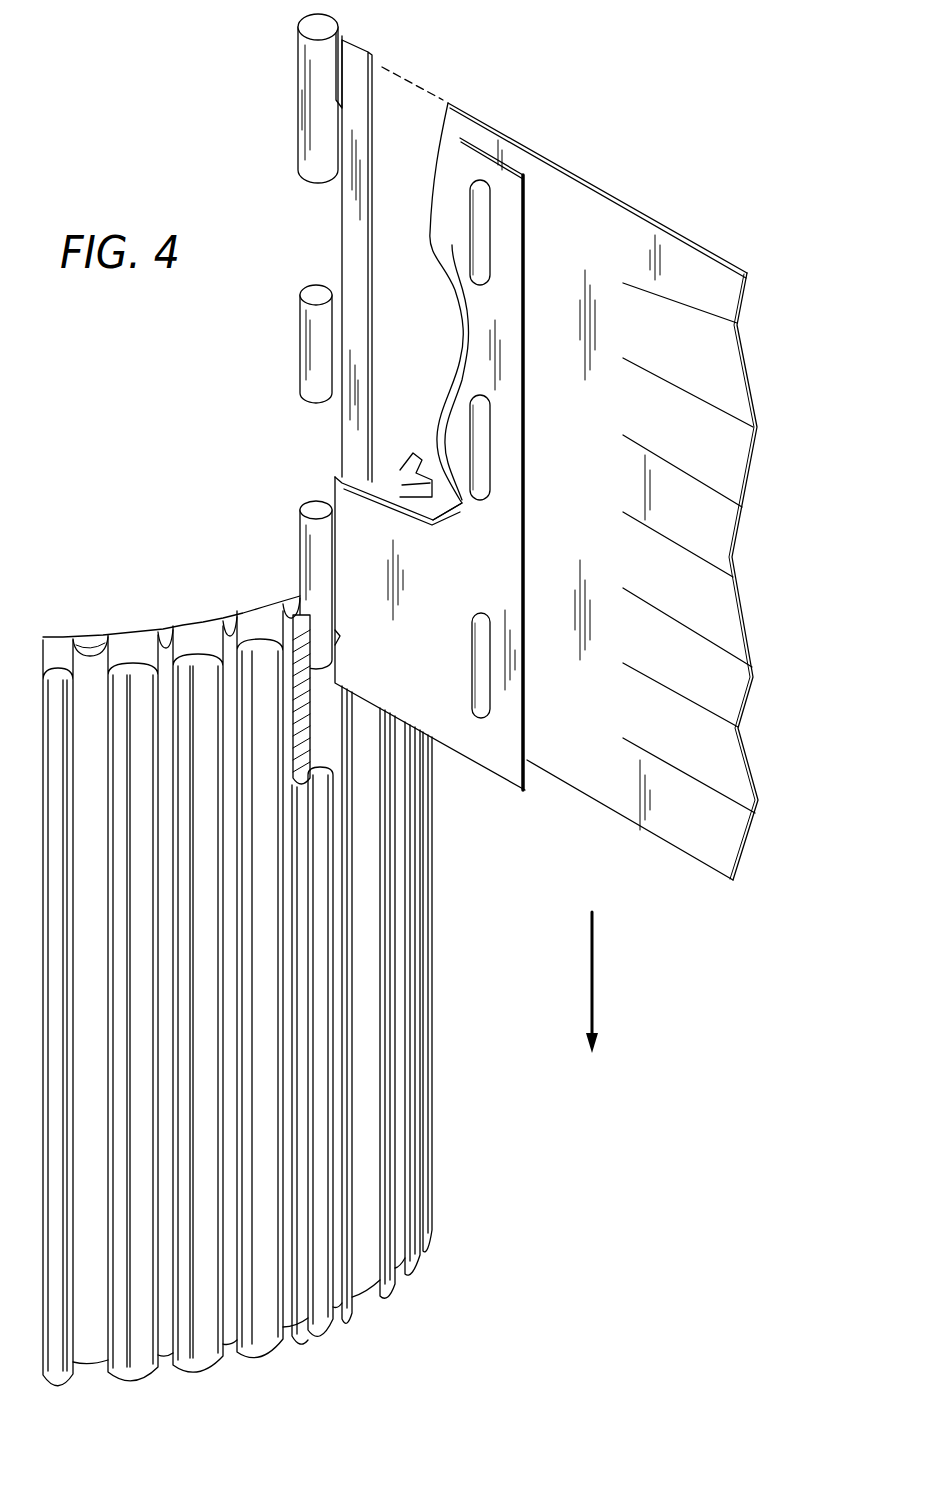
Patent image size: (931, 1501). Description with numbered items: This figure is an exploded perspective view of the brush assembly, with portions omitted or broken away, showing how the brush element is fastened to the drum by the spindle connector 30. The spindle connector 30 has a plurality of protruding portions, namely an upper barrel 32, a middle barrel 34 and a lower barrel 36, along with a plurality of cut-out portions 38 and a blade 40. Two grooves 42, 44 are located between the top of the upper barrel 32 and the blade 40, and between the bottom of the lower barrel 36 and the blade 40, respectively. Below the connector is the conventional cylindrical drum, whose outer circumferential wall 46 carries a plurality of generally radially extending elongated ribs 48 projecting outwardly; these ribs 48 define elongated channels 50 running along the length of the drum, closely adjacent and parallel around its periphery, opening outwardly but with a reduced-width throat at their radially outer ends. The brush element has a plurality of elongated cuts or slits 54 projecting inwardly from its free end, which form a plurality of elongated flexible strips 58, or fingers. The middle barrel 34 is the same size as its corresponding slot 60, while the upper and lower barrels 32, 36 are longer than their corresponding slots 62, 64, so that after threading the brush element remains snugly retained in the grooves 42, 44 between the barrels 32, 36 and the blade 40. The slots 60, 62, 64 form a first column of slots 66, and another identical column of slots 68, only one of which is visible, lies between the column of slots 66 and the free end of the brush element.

The spindle connector 30 is at (382, 410).
The upper barrel 32 is at (308, 90).
The middle barrel 34 is at (308, 340).
The lower barrel 36 is at (308, 540).
The cut-out portions 38 is at (318, 228).
The blade 40 is at (355, 270).
The groove 42 is at (338, 63).
The groove 44 is at (337, 615).
The outer circumferential wall 46 is at (60, 640).
The ribs 48 is at (185, 647).
The channels 50 is at (104, 655).
The slits 54 is at (777, 393).
The flexible strips 58 is at (712, 290).
The slot 60 is at (483, 430).
The slot 62 is at (478, 225).
The slot 64 is at (483, 650).
The first column of slots 66 is at (474, 728).
The second column of slots 68 is at (345, 655).